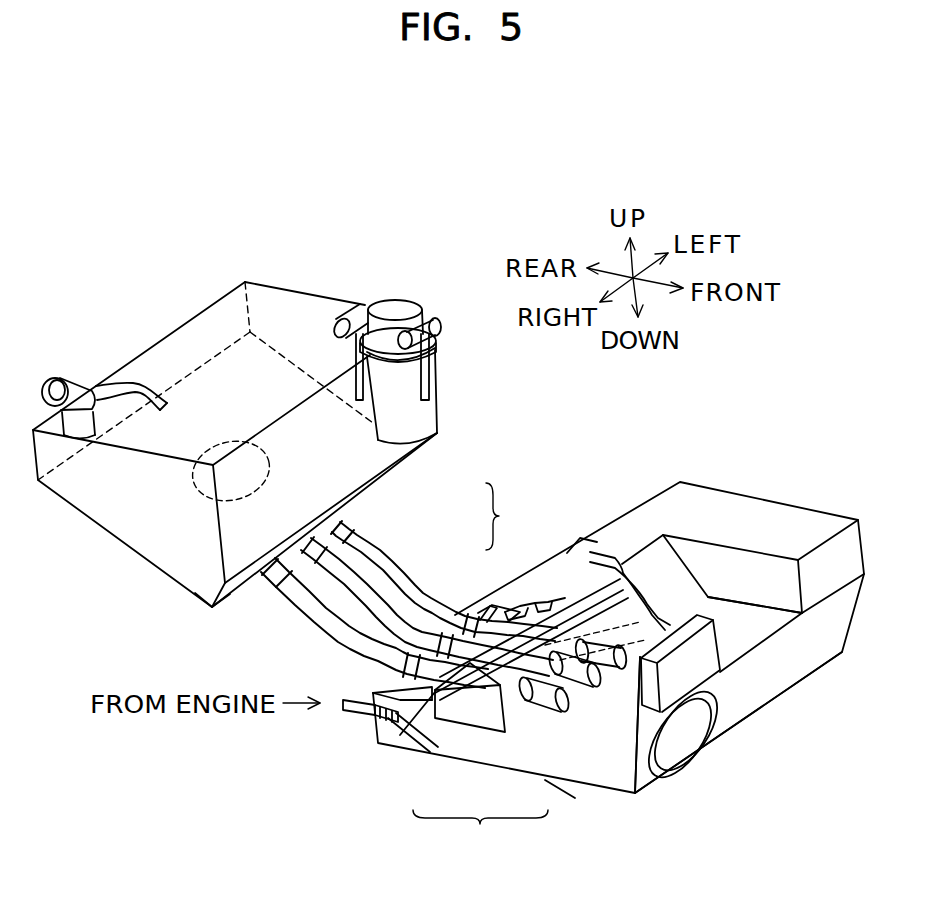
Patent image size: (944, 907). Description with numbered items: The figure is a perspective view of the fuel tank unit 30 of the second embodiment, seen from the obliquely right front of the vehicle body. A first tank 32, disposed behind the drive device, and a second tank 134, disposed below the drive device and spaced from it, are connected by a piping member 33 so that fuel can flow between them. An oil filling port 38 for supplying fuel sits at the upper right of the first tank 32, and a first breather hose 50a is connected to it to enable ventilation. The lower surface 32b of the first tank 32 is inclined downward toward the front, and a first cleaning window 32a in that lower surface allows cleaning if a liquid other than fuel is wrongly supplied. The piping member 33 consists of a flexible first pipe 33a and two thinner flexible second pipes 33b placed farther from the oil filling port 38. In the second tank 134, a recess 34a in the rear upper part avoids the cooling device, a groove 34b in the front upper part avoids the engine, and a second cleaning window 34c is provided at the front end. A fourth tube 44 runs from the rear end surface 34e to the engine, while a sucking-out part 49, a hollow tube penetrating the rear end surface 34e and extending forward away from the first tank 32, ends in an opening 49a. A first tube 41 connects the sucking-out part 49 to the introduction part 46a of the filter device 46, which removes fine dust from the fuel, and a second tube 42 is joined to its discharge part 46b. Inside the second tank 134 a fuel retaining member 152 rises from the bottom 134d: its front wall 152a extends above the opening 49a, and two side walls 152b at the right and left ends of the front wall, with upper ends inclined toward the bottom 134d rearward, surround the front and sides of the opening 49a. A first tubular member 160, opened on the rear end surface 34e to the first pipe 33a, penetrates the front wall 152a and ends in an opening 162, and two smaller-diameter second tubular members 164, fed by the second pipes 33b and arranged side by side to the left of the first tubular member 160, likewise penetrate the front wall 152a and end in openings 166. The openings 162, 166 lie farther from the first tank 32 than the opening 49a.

The fuel tank unit 30 is at (712, 458).
The first tank 32 is at (100, 538).
The first cleaning window 32a is at (200, 487).
The lower surface 32b is at (197, 613).
The piping member 33 is at (409, 585).
The first pipe 33a is at (322, 598).
The second pipes 33b is at (374, 600).
The recess 34a is at (568, 551).
The groove 34b is at (741, 578).
The second cleaning window 34c is at (680, 757).
The rear end surface 34e is at (393, 690).
The oil filling port 38 is at (57, 379).
The first tube 41 is at (431, 374).
The second tube 42 is at (354, 360).
The fourth tube 44 is at (350, 711).
The filter device 46 is at (395, 297).
The introduction part 46a is at (440, 319).
The discharge part 46b is at (350, 318).
The sucking-out part 49 is at (524, 610).
The opening 49a is at (640, 622).
The first breather hose 50a is at (121, 385).
The second tank 134 is at (776, 705).
The bottom 134d is at (620, 775).
The fuel retaining member 152 is at (504, 760).
The front wall 152a is at (515, 760).
The side walls 152b is at (470, 755).
The first tubular member 160 is at (580, 795).
The opening 162 is at (555, 705).
The second tubular member 164 is at (655, 668).
The opening 166 is at (590, 680).